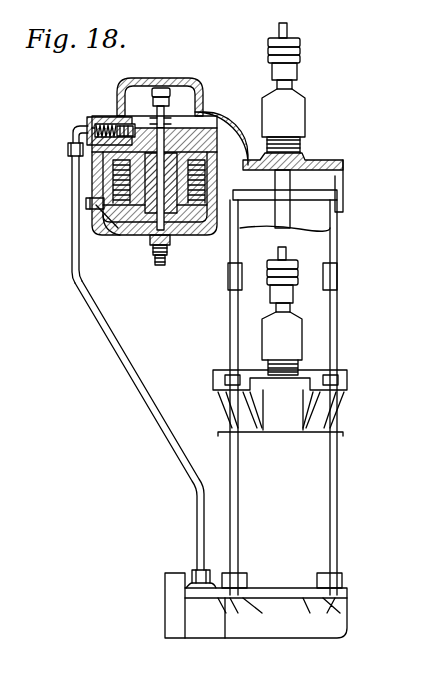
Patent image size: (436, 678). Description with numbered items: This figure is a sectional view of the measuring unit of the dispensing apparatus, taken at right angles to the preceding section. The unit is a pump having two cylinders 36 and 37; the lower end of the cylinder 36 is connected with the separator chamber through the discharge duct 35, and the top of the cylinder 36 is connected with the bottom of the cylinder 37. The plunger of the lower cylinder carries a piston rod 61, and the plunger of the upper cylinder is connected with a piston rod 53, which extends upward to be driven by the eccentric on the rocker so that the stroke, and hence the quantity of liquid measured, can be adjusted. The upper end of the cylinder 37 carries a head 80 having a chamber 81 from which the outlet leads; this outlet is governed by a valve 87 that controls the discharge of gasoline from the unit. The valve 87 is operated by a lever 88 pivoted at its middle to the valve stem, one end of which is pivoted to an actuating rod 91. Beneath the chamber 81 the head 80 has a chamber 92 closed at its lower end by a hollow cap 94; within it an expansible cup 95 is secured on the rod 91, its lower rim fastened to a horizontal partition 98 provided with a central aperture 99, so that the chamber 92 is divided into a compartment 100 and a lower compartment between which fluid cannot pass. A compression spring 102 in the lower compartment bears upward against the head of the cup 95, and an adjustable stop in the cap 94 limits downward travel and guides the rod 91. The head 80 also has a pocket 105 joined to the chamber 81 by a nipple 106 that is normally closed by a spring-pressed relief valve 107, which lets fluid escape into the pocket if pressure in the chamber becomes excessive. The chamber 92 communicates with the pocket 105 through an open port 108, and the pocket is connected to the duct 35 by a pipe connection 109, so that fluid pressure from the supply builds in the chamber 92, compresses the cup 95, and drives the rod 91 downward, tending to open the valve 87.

The discharge duct 35 is at (166, 610).
The cylinder 36 is at (280, 433).
The cylinder 37 is at (338, 242).
The piston rod 53 is at (289, 33).
The piston rod 61 is at (287, 253).
The head 80 is at (322, 162).
The chamber 81 is at (185, 93).
The valve 87 is at (206, 118).
The lever 88 is at (161, 88).
The actuating rod 91 is at (165, 117).
The chamber 92 is at (95, 175).
The hollow cap 94 is at (201, 238).
The expansible cup 95 is at (95, 200).
The partition 98 is at (115, 230).
The central aperture 99 is at (124, 196).
The compartment 100 is at (90, 186).
The compression spring 102 is at (192, 196).
The pocket 105 is at (106, 124).
The nipple 106 is at (128, 126).
The relief valve 107 is at (110, 117).
The open port 108 is at (75, 160).
The pipe connection 109 is at (118, 341).